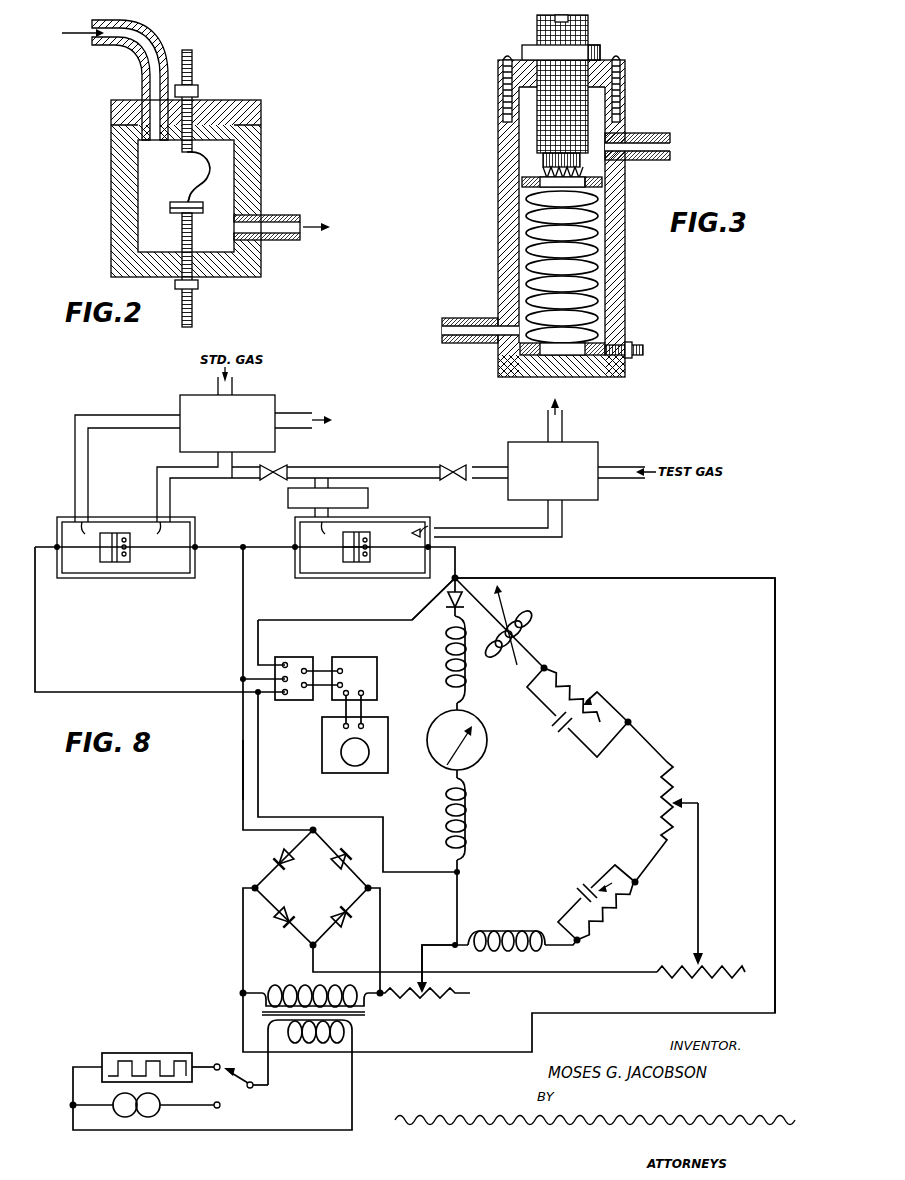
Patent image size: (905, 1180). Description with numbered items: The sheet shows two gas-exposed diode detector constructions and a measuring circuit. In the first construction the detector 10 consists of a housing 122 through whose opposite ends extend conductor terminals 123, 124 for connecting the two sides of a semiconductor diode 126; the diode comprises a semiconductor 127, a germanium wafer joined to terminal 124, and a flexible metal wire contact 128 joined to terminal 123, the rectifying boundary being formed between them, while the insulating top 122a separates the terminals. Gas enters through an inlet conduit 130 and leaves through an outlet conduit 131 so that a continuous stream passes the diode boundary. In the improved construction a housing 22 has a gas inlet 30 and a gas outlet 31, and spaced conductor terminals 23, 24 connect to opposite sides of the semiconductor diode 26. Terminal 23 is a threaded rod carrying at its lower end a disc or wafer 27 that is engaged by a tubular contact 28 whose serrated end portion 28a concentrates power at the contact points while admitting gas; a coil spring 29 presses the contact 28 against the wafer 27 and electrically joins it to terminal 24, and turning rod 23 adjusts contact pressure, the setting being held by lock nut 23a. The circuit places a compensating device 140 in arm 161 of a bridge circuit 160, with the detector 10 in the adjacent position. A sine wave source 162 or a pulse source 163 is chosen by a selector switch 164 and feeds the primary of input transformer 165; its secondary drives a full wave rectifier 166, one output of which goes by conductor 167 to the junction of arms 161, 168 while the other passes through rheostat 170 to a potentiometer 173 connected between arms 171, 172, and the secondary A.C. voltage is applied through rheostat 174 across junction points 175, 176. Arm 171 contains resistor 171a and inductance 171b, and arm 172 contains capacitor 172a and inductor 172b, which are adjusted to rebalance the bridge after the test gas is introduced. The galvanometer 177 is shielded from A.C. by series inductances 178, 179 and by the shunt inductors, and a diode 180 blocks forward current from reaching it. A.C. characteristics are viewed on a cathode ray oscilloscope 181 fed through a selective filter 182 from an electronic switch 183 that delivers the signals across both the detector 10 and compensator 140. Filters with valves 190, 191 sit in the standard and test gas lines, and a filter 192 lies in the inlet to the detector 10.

In FIG. 2, the housing 122 is at (112, 242).
In FIG. 2, the top of housing 122a is at (236, 100).
In FIG. 2, the conductor terminal 123 is at (194, 70).
In FIG. 2, the conductor terminal 124 is at (193, 302).
In FIG. 2, the semiconductor diode 126 is at (178, 216).
In FIG. 2, the semiconductor 127 is at (184, 190).
In FIG. 2, the flexible metal wire contact 128 is at (180, 158).
In FIG. 2, the inlet conduit 130 is at (138, 58).
In FIG. 2, the outlet conduit 131 is at (277, 242).
In FIG. 3, the housing 22 is at (507, 275).
In FIG. 3, the conductor terminal 23 is at (536, 25).
In FIG. 3, the lock nut 23a is at (600, 48).
In FIG. 3, the conductor terminal 24 is at (632, 342).
In FIG. 3, the semiconductor diode 26 is at (530, 170).
In FIG. 8, the semiconductor diode 26 is at (380, 534).
In FIG. 3, the disc or wafer 27 is at (540, 158).
In FIG. 3, the tubular or ring-shaped contact 28 is at (570, 181).
In FIG. 3, the serrated end portion 28a is at (616, 179).
In FIG. 3, the coil spring 29 is at (594, 237).
In FIG. 3, the gas inlet 30 is at (637, 133).
In FIG. 3, the gas outlet 31 is at (470, 345).
In FIG. 8, the detector 10 is at (436, 515).
In FIG. 8, the compensating device 140 is at (118, 506).
In FIG. 8, the bridge circuit 160 is at (705, 548).
In FIG. 8, the bridge arm 161 is at (136, 603).
In FIG. 8, the source of sine waves 162 is at (141, 1118).
In FIG. 8, the square wave or pulse source 163 is at (163, 1038).
In FIG. 8, the selector switch 164 is at (232, 1092).
In FIG. 8, the input transformer 165 is at (260, 1010).
In FIG. 8, the full wave rectifier 166 is at (312, 888).
In FIG. 8, the conductor 167 is at (243, 770).
In FIG. 8, the bridge arm 168 is at (388, 592).
In FIG. 8, the rheostat 170 is at (712, 964).
In FIG. 8, the bridge arm 171 is at (549, 735).
In FIG. 8, the resistor 171a is at (578, 703).
In FIG. 8, the inductance 171b is at (519, 623).
In FIG. 8, the bridge arm 172 is at (565, 884).
In FIG. 8, the capacitor 172a is at (590, 881).
In FIG. 8, the inductor 172b is at (492, 932).
In FIG. 8, the potentiometer 173 is at (675, 791).
In FIG. 8, the rheostat 174 is at (420, 1003).
In FIG. 8, the junction point 175 is at (454, 941).
In FIG. 8, the junction point 176 is at (462, 575).
In FIG. 8, the galvanometer 177 is at (498, 706).
In FIG. 8, the inductance 178 is at (447, 655).
In FIG. 8, the inductance 179 is at (466, 806).
In FIG. 8, the diode 180 is at (451, 607).
In FIG. 8, the cathode ray oscilloscope 181 is at (323, 775).
In FIG. 8, the selective filter 182 is at (371, 656).
In FIG. 8, the electronic switch 183 is at (283, 701).
In FIG. 8, the filter and valve 190 is at (278, 401).
In FIG. 8, the filter and valve 191 is at (534, 467).
In FIG. 8, the filter 192 is at (288, 505).